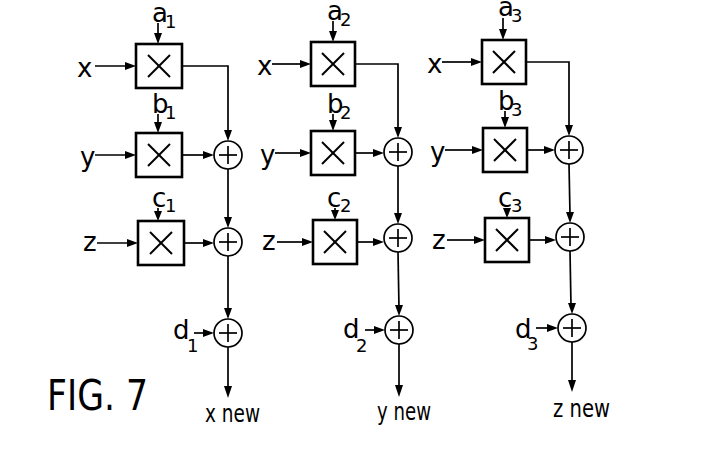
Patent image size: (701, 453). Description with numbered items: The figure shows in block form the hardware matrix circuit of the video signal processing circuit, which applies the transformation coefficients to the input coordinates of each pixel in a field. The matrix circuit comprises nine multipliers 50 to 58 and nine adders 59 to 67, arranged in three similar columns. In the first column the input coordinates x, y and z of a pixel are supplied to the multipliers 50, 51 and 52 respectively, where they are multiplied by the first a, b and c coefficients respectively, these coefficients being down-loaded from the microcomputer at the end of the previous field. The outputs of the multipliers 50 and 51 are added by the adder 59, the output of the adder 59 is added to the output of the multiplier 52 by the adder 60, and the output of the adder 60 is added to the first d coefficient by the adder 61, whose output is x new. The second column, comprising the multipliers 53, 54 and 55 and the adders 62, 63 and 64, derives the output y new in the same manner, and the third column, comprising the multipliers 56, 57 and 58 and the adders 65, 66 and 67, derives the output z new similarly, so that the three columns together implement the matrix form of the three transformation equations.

The multiplier 50 is at (182, 52).
The multiplier 51 is at (182, 138).
The multiplier 52 is at (184, 226).
The multiplier 53 is at (355, 48).
The multiplier 54 is at (355, 136).
The multiplier 55 is at (357, 226).
The multiplier 56 is at (526, 46).
The multiplier 57 is at (527, 133).
The multiplier 58 is at (529, 225).
The adder 59 is at (238, 146).
The adder 60 is at (238, 232).
The adder 61 is at (238, 323).
The adder 62 is at (408, 142).
The adder 63 is at (408, 228).
The adder 64 is at (409, 320).
The adder 65 is at (579, 140).
The adder 66 is at (580, 227).
The adder 67 is at (582, 318).